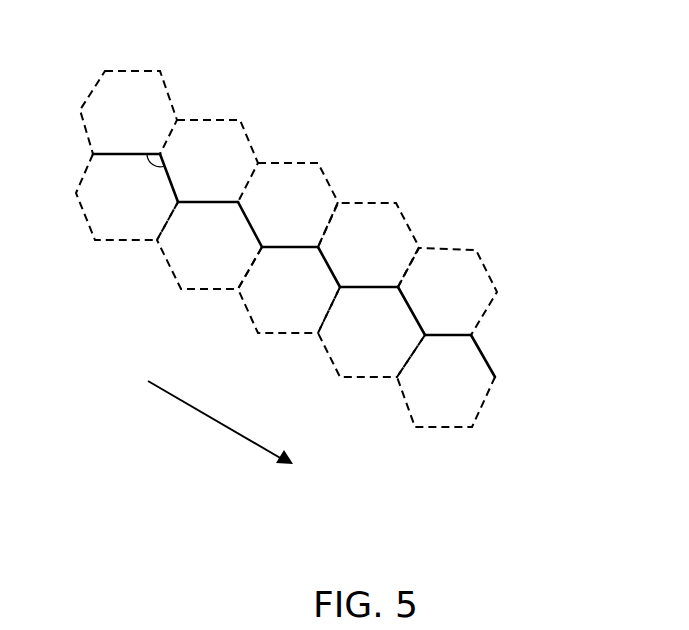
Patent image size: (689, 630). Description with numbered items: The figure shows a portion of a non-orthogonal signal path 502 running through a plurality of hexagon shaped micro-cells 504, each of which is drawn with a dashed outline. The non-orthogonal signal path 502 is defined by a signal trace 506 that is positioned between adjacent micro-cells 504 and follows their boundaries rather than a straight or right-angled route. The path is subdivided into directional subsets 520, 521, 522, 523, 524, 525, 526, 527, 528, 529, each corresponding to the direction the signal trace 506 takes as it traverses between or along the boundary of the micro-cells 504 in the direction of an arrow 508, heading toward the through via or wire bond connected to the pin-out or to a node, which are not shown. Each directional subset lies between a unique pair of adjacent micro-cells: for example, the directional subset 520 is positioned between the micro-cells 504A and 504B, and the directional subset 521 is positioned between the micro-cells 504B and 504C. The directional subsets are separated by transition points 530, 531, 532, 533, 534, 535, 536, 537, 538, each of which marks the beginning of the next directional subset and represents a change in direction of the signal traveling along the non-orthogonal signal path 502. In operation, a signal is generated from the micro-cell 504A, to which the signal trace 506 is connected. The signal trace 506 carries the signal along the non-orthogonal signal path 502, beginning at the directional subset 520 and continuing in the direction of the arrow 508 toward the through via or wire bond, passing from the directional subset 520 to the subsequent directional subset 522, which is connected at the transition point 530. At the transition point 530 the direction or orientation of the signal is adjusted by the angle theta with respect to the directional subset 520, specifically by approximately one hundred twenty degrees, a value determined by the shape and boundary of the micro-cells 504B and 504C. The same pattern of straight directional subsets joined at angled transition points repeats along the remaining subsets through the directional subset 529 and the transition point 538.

The non-orthogonal signal path 502 is at (113, 111).
The hexagon shaped micro-cell 504 is at (455, 251).
The micro-cell 504A is at (135, 72).
The micro-cell 504B is at (120, 232).
The micro-cell 504C is at (213, 120).
The signal trace 506 is at (498, 378).
The arrow 508 is at (207, 418).
The directional subset 520 is at (130, 162).
The directional subset 521 is at (165, 174).
The directional subset 522 is at (223, 207).
The directional subset 523 is at (250, 222).
The directional subset 524 is at (302, 250).
The directional subset 525 is at (333, 265).
The directional subset 526 is at (385, 298).
The directional subset 527 is at (413, 310).
The directional subset 528 is at (471, 340).
The directional subset 529 is at (480, 345).
The transition point 530 is at (165, 148).
The transition point 531 is at (181, 206).
The transition point 532 is at (229, 202).
The transition point 533 is at (263, 250).
The transition point 534 is at (312, 247).
The transition point 535 is at (343, 292).
The transition point 536 is at (397, 286).
The transition point 537 is at (428, 338).
The transition point 538 is at (472, 333).